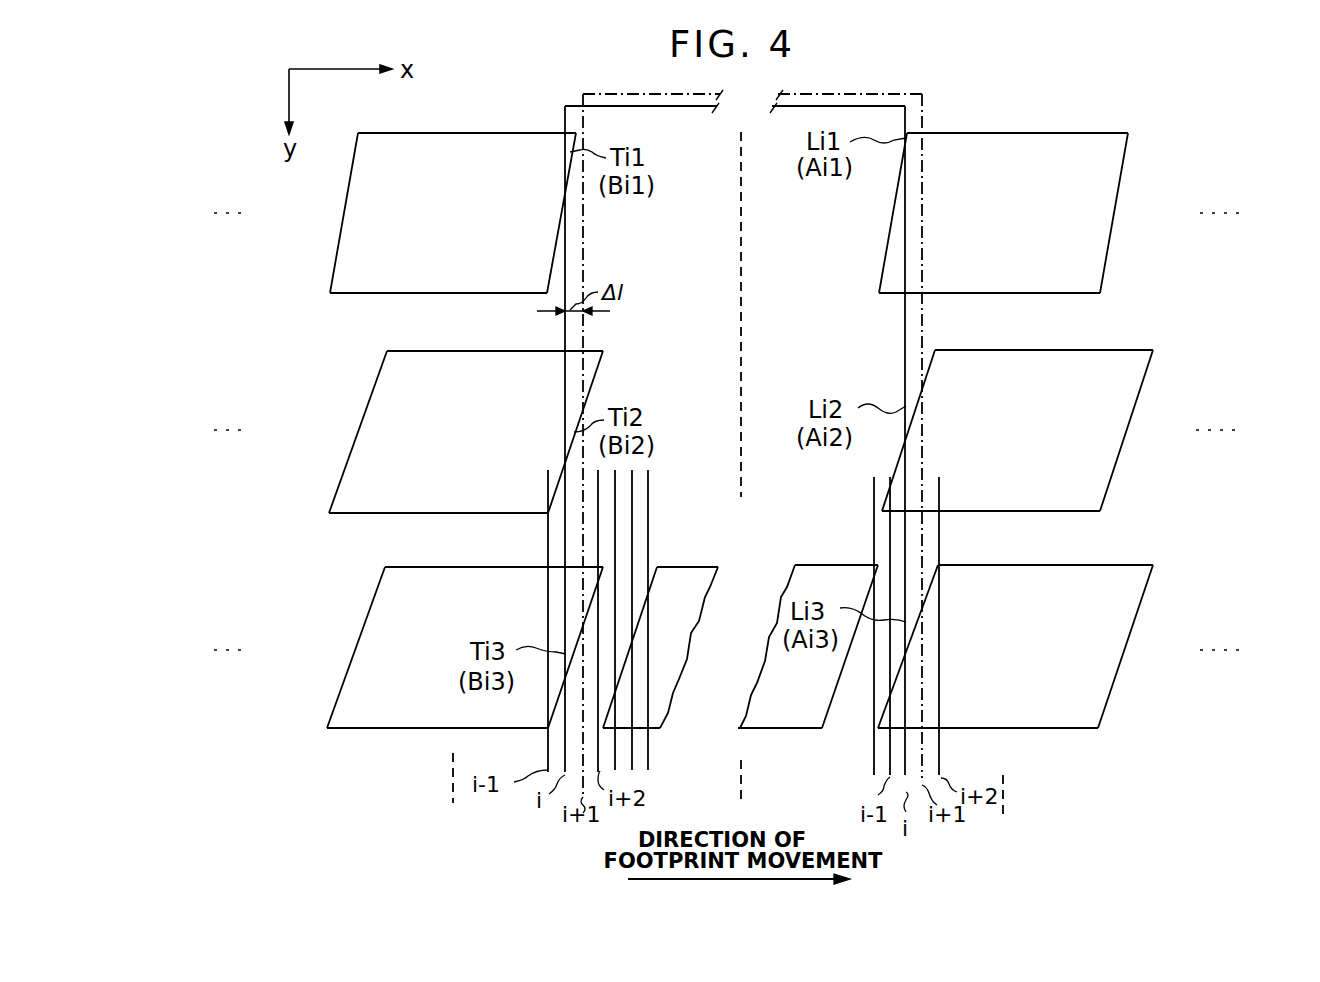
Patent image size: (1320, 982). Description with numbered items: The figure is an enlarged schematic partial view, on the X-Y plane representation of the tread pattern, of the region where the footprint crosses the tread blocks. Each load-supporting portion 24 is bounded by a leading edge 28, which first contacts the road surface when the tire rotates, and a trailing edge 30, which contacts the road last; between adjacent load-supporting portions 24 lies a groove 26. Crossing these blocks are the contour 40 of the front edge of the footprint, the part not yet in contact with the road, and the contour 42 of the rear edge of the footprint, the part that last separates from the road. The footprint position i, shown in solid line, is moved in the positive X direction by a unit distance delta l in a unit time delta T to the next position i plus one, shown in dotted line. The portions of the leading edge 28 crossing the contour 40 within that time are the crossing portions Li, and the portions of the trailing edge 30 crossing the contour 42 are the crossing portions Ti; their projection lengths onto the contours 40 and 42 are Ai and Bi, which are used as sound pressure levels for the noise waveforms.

The load-supporting portion 24 is at (456, 142).
The groove 26 is at (1050, 310).
The leading edge 28 is at (344, 242).
The trailing edge 30 is at (566, 252).
The contour of the front edge of the footprint 40 is at (904, 318).
The contour of the rear edge of the footprint 42 is at (566, 338).